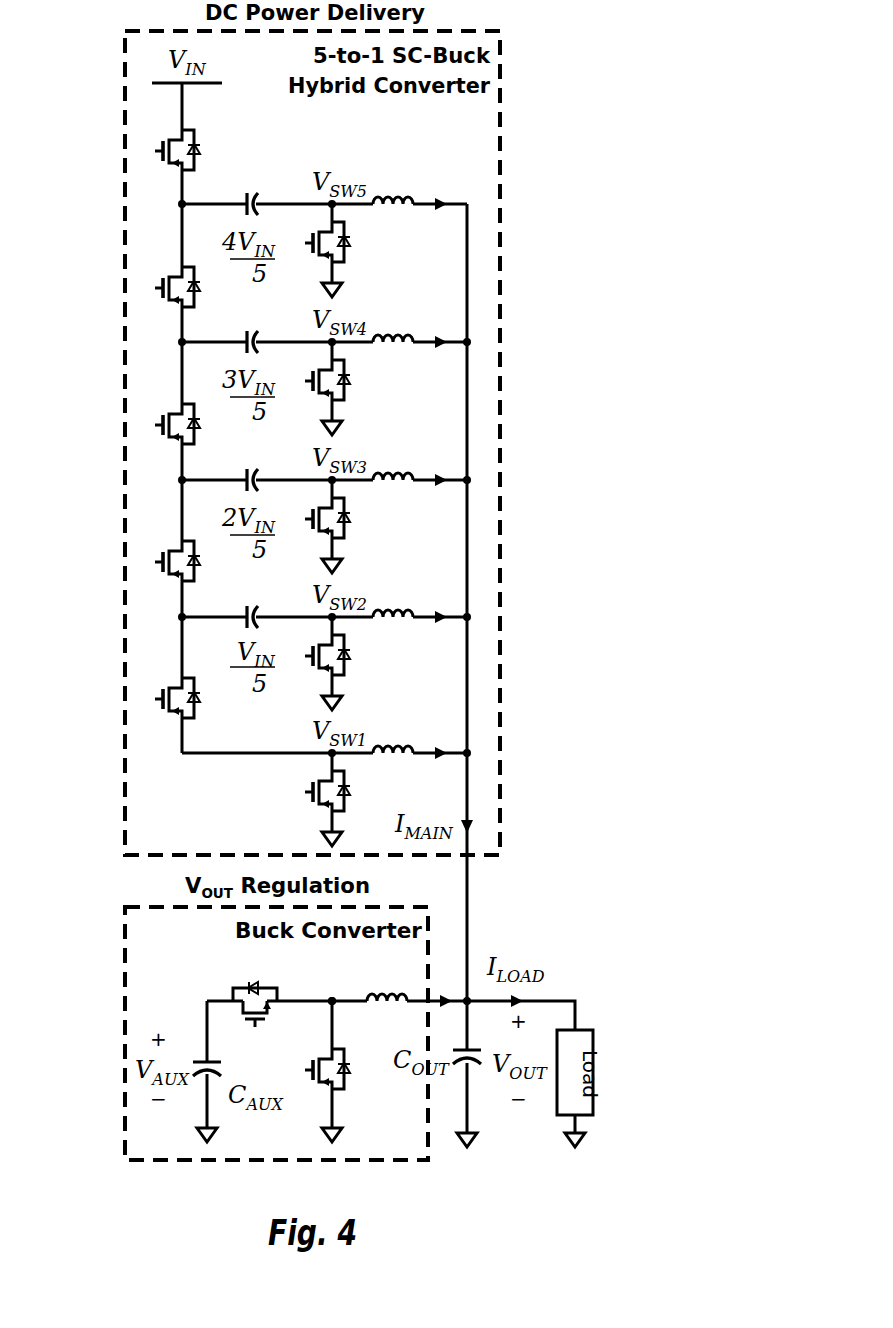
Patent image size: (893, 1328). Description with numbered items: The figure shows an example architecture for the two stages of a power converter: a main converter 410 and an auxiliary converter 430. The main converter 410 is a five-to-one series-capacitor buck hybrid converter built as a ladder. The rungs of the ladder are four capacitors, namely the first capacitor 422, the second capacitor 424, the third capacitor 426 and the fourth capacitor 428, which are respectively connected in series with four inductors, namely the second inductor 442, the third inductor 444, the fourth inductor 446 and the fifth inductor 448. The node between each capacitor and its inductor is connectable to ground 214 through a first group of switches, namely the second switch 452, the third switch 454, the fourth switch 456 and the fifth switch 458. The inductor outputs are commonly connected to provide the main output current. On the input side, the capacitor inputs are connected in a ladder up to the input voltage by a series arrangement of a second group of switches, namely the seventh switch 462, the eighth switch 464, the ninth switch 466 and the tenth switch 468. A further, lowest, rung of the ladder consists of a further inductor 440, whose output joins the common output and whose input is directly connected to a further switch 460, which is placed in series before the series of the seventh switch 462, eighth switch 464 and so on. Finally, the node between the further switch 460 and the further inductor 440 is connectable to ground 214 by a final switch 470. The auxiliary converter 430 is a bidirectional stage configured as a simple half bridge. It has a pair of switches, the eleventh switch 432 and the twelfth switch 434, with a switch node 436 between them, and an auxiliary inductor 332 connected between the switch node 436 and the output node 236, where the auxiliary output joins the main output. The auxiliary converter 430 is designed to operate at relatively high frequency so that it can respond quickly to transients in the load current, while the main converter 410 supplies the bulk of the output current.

The main converter 410 is at (124, 789).
The auxiliary converter 430 is at (124, 970).
The switch M10 468 is at (155, 152).
The switch M9 466 is at (157, 294).
The switch M8 464 is at (158, 431).
The switch M7 462 is at (158, 567).
The switch M6 460 is at (157, 697).
The capacitor C4 428 is at (245, 208).
The capacitor C3 426 is at (244, 347).
The capacitor C2 424 is at (244, 485).
The capacitor C1 422 is at (245, 624).
The switch M5 458 is at (319, 262).
The switch M4 456 is at (319, 400).
The switch M3 454 is at (319, 538).
The switch M2 452 is at (304, 662).
The switch M1 470 is at (306, 782).
The inductor L5 448 is at (387, 210).
The inductor L4 446 is at (387, 348).
The inductor L3 444 is at (387, 486).
The inductor L2 442 is at (387, 623).
The inductor L1 440 is at (387, 757).
The switch M12 434 is at (233, 991).
The switch node 436 is at (330, 1003).
The switch M11 432 is at (352, 1083).
The ground 214 is at (317, 1145).
The auxiliary inductor 332 is at (388, 993).
The output node 236 is at (455, 993).